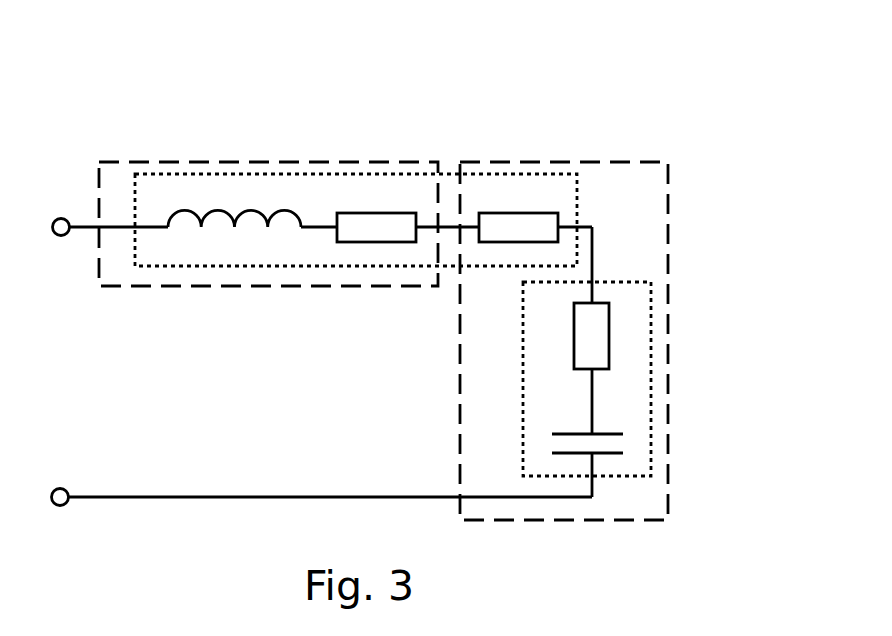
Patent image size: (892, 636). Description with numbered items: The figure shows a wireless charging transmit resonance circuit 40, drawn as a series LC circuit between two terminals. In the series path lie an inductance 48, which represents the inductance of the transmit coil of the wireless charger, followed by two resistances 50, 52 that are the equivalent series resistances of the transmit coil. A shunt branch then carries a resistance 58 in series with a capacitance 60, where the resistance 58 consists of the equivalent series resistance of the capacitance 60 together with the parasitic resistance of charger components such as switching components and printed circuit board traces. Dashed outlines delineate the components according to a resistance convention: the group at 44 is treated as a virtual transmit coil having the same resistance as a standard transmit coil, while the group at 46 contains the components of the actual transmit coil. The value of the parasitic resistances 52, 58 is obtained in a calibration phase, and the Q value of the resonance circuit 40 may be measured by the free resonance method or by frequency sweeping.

The wireless charging transmit (TX) resonance circuit 40 is at (637, 125).
The virtual transmit coil 44 is at (317, 287).
The components of the actual transmit coil 46 is at (579, 197).
The inductance 48 is at (295, 205).
The resistance 50 is at (378, 218).
The resistance 52 is at (505, 223).
The resistance 58 is at (594, 341).
The capacitance 60 is at (616, 446).